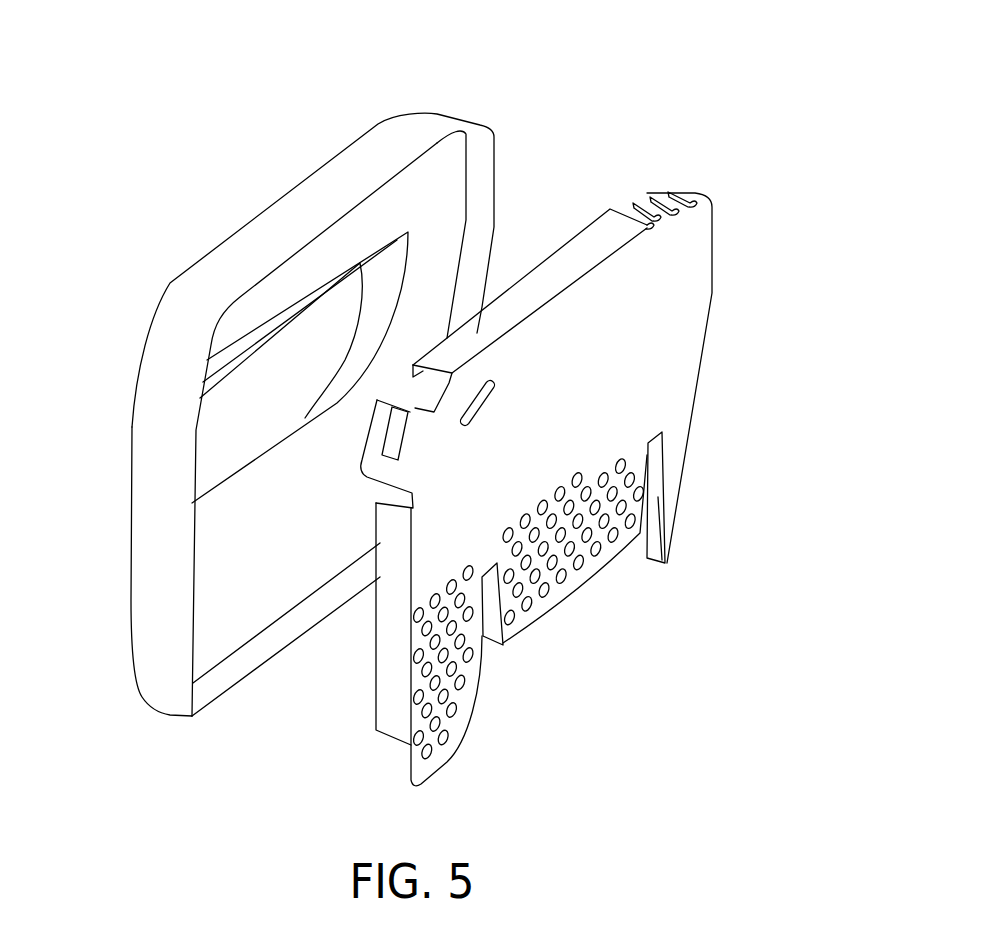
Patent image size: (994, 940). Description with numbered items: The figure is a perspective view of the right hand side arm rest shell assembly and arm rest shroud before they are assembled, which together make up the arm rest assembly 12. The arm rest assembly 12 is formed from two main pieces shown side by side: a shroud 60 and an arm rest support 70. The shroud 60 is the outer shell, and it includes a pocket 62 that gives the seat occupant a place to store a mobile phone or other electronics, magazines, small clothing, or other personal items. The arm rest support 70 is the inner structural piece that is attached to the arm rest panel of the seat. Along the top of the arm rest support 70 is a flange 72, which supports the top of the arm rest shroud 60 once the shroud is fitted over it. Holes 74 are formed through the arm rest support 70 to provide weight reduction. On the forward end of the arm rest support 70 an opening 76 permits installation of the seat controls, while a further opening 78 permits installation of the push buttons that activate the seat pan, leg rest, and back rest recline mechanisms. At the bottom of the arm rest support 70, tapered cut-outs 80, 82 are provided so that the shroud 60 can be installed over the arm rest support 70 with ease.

The arm rest assembly 12 is at (442, 50).
The shroud 60 is at (235, 260).
The pocket 62 is at (223, 417).
The arm rest support 70 is at (670, 303).
The flange 72 is at (555, 266).
The holes 74 is at (540, 577).
The opening 76 is at (392, 445).
The opening 78 is at (495, 387).
The tapered cut-out 80 is at (650, 535).
The tapered cut-out 82 is at (480, 648).